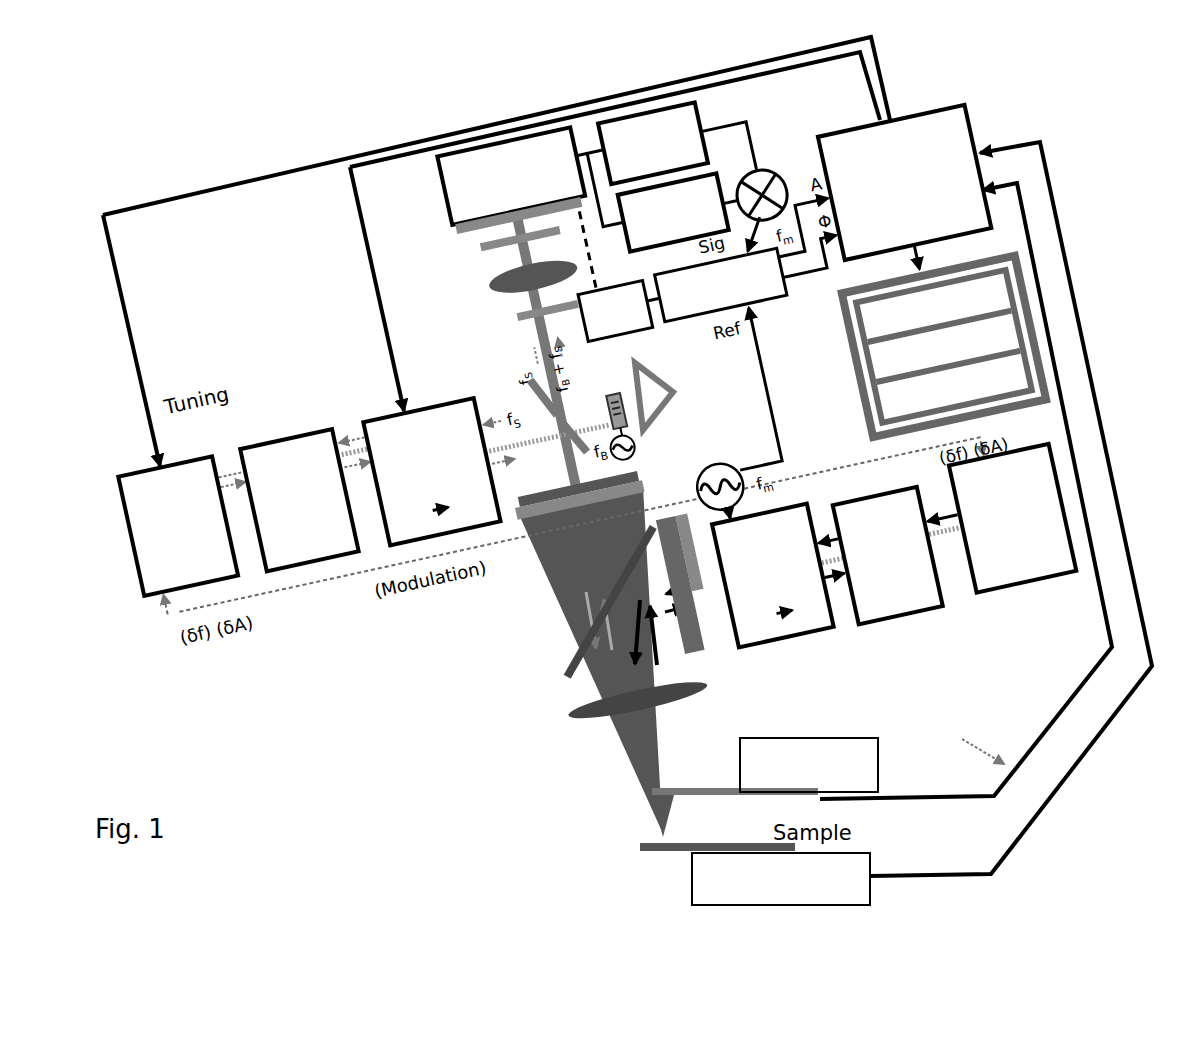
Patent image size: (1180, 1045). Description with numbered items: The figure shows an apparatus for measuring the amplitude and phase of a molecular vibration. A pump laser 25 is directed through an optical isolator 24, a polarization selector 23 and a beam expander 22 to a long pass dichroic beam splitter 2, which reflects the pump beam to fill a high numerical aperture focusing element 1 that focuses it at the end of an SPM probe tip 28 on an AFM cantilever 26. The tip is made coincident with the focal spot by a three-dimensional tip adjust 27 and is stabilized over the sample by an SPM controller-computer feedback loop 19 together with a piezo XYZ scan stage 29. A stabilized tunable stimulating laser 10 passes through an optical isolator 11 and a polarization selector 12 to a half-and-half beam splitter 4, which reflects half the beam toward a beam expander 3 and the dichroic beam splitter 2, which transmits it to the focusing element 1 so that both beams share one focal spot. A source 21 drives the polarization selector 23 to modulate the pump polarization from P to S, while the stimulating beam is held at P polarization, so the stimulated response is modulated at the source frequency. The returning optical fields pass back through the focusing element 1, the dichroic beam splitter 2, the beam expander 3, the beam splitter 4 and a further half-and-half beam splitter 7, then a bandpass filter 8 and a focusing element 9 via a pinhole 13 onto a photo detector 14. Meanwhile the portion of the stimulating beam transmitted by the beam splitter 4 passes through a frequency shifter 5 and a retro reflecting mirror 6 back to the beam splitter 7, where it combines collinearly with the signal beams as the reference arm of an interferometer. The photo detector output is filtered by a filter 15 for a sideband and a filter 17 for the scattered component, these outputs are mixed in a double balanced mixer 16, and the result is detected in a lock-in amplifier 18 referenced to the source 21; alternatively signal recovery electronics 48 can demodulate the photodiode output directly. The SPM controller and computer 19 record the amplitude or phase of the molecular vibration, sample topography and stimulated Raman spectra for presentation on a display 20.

The focusing element 1 is at (563, 706).
The long pass dichroic beam splitter 2 is at (568, 650).
The beam expander 3 is at (641, 480).
The 50/50 beam splitter 4 is at (566, 446).
The frequency shifter 5 is at (641, 458).
The retro reflecting mirror 6 is at (640, 381).
The 50/50 beam splitter 7 is at (522, 389).
The bandpass filter 8 is at (512, 330).
The focusing element 9 is at (456, 304).
The stabilized tunable stimulating laser 10 is at (135, 457).
The optical isolator 11 is at (280, 430).
The polarization selector 12 is at (420, 398).
The pinhole 13 is at (470, 252).
The photo detector 14 is at (432, 193).
The filter 15 is at (705, 116).
The double balanced mixer 16 is at (775, 163).
The filter 17 is at (624, 244).
The lock-in amplifier 18 is at (768, 306).
The SPM controller-computer feedback loop 19 is at (843, 268).
The display 20 is at (851, 378).
The source 21 is at (727, 462).
The beam expander 22 is at (716, 643).
The polarization selector 23 is at (786, 645).
The optical isolator 24 is at (882, 627).
The pump laser 25 is at (1010, 597).
The AFM cantilever 26 is at (690, 783).
The 3D tip adjust 27 is at (889, 765).
The SPM probe tip 28 is at (645, 826).
The piezo XYZ scan stage 29 is at (690, 882).
The signal recovery electronics 48 is at (653, 335).